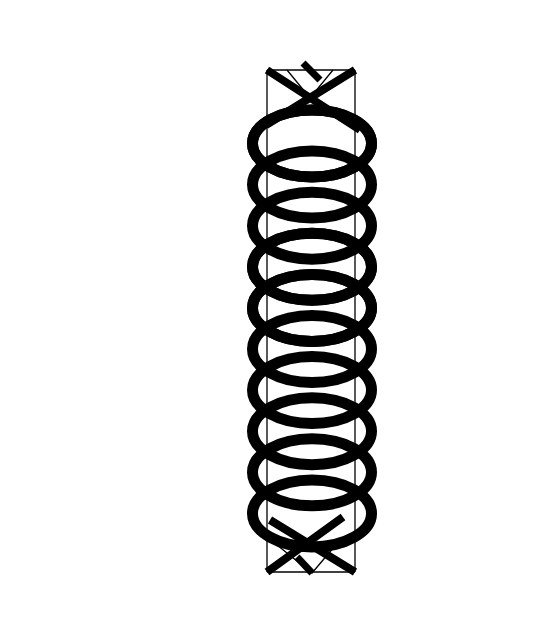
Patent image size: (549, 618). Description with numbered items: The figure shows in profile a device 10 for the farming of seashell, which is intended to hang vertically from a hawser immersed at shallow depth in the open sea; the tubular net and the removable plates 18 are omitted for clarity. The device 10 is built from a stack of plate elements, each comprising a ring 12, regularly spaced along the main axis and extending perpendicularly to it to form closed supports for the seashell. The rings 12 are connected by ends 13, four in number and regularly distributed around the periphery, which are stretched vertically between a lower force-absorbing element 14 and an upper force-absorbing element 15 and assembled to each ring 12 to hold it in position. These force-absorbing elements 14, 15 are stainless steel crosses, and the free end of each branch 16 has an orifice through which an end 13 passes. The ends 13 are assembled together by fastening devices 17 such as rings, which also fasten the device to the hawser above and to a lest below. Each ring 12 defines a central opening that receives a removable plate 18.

The device for the farming of seashell 10 is at (168, 98).
The ring 12 is at (248, 156).
The end 13 is at (273, 110).
The lower force-absorbing element 14 is at (364, 568).
The upper force-absorbing element 15 is at (365, 71).
The branch 16 is at (267, 86).
The fastening device 17 is at (308, 66).
The removable plate 18 is at (375, 308).